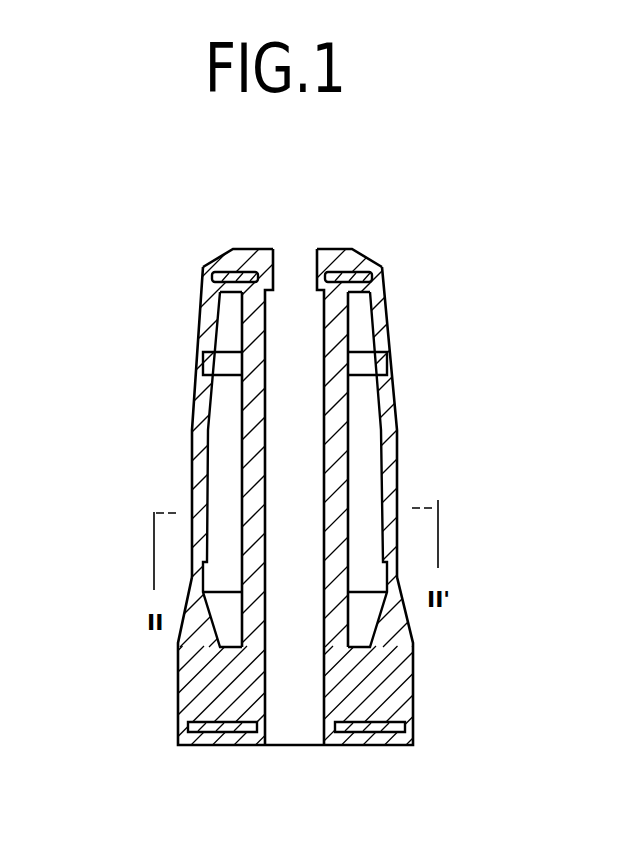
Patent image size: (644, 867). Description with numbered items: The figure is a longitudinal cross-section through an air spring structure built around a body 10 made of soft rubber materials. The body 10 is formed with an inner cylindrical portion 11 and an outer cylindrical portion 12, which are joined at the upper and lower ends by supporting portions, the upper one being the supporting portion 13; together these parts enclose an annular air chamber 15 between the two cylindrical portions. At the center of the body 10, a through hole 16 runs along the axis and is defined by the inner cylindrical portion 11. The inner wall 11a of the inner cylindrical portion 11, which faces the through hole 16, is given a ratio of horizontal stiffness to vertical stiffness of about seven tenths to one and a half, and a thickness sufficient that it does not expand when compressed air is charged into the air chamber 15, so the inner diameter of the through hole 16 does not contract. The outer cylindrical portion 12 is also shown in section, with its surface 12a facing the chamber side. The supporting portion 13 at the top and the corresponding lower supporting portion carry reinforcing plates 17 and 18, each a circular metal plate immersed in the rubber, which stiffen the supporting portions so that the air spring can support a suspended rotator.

The body 10 is at (190, 413).
The inner cylindrical portion 11 is at (350, 420).
The inner wall 11a is at (332, 512).
The outer cylindrical portion 12 is at (412, 405).
The inner surface of outer sleeve 12a is at (203, 455).
The supporting portion 13 is at (363, 258).
The annular air chamber 15 is at (217, 405).
The through hole 16 is at (293, 459).
The reinforcing plate 17 is at (217, 272).
The reinforcing plate 18 is at (258, 745).